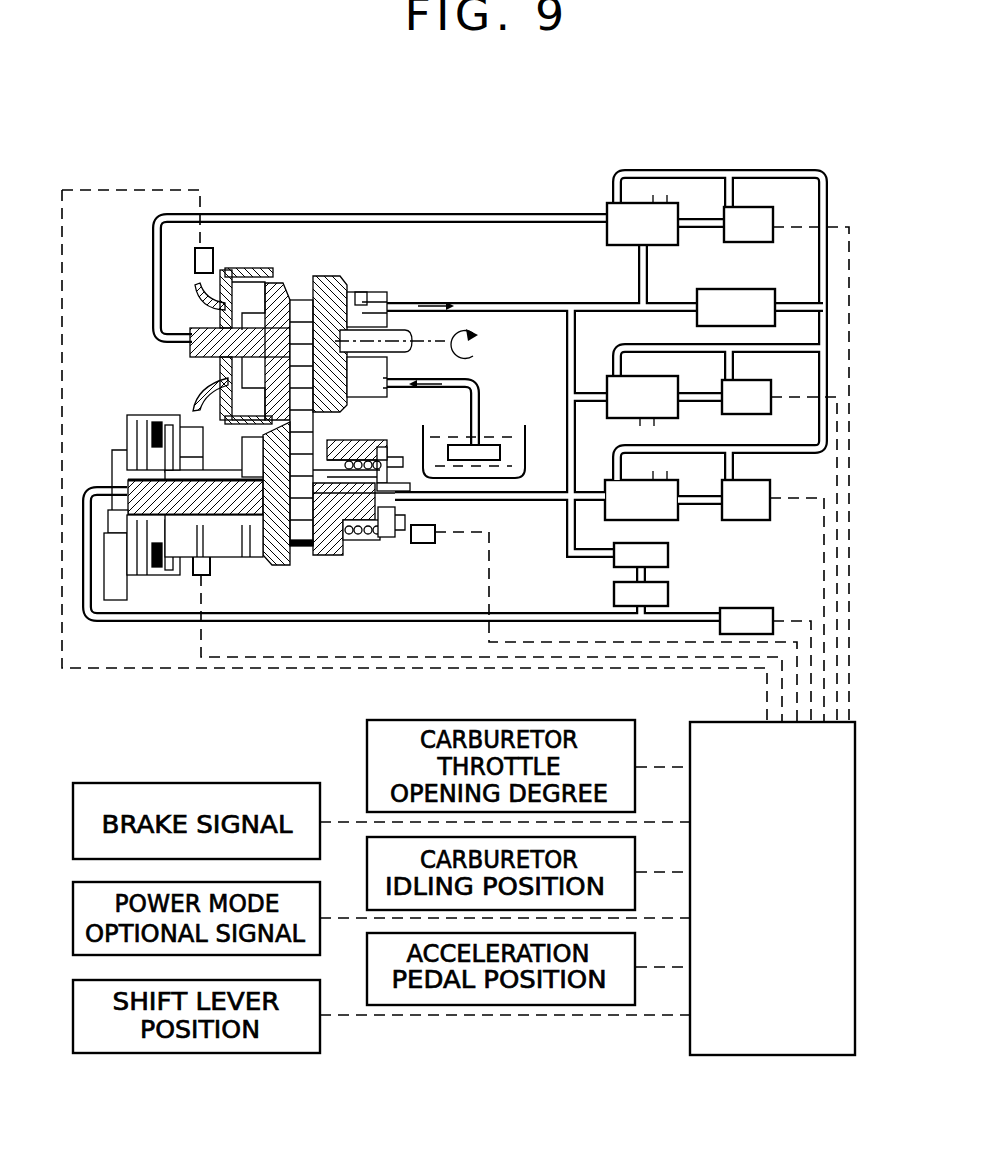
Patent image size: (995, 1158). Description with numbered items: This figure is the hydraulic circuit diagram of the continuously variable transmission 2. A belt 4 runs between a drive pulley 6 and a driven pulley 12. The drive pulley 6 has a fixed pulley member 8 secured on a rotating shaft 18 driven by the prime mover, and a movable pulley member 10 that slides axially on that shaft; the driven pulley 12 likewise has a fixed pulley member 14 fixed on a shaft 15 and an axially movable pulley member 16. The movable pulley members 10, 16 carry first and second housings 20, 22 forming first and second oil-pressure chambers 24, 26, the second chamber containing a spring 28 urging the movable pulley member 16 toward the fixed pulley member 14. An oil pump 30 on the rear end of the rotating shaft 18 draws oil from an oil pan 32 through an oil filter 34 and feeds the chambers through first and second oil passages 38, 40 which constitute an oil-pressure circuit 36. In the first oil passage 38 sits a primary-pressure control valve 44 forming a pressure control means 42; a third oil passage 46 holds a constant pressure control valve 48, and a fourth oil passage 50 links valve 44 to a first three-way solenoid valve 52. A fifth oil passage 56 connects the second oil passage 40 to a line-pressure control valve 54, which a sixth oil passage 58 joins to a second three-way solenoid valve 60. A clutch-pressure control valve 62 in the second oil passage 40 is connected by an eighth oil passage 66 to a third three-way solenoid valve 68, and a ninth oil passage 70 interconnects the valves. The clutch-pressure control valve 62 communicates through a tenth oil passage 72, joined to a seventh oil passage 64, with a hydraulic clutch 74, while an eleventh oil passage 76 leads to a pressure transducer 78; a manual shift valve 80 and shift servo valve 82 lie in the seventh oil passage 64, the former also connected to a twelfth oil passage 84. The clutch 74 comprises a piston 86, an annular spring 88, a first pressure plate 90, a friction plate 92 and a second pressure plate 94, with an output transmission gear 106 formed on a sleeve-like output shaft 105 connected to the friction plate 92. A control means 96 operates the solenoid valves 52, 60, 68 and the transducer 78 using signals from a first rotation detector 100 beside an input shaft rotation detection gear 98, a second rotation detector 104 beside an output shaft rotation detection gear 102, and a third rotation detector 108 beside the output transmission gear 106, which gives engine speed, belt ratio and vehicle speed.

The continuously variable transmission 2 is at (782, 150).
The belt 4 is at (305, 302).
The drive pulley 6 is at (166, 351).
The fixed pulley member on the drive side 8 is at (337, 300).
The movable pulley member on the drive side 10 is at (284, 300).
The driven pulley 12 is at (409, 562).
The fixed pulley member on the driven side 14 is at (280, 560).
The shaft 15 is at (185, 498).
The movable pulley member on the driven side 16 is at (325, 562).
The rotating shaft 18 is at (401, 342).
The first housing 20 is at (204, 470).
The second housing 22 is at (388, 447).
The first oil-pressure chamber 24 is at (226, 393).
The second oil-pressure chamber 26 is at (356, 546).
The seal 28 is at (386, 540).
The oil pump 30 is at (386, 302).
The oil pan 32 is at (505, 470).
The oil filter 34 is at (490, 446).
The oil-pressure circuit 36 is at (407, 204).
The first oil passage 38 is at (518, 213).
The second oil passage 40 is at (575, 305).
The pressure control means 42 is at (598, 196).
The primary-pressure control valve 44 is at (642, 212).
The third oil passage 46 is at (668, 311).
The constant pressure control valve 48 is at (760, 307).
The fourth oil passage 50 is at (711, 232).
The first three-way solenoid valve 52 is at (748, 224).
The line-pressure control valve 54 is at (642, 408).
The fifth oil passage 56 is at (592, 392).
The sixth oil passage 58 is at (710, 400).
The second three-way solenoid valve 60 is at (746, 397).
The clutch-pressure control valve 62 is at (536, 487).
The seventh oil passage 64 is at (636, 576).
The eighth oil passage 66 is at (705, 503).
The third three-way solenoid valve 68 is at (746, 500).
The ninth oil passage 70 is at (800, 172).
The tenth oil passage 72 is at (446, 656).
The hydraulic clutch 74 is at (116, 433).
The eleventh oil passage 76 is at (695, 615).
The pressure transducer 78 is at (760, 612).
The manual shift valve 80 is at (660, 555).
The shift servo valve 82 is at (616, 591).
The twelfth oil passage 84 is at (566, 536).
The piston 86 is at (110, 573).
The annular spring 88 is at (141, 575).
The first pressure plate 90 is at (150, 572).
The friction plate 92 is at (176, 576).
The second pressure plate 94 is at (194, 576).
The control means 96 is at (772, 1057).
The input shaft rotation detection gear 98 is at (198, 301).
The first rotation detector 100 is at (195, 263).
The output shaft rotation detection gear 102 is at (405, 470).
The second rotation detector 104 is at (428, 541).
The output shaft 105 is at (190, 583).
The output transmission gear 106 is at (200, 450).
The third rotation detector 108 is at (211, 561).